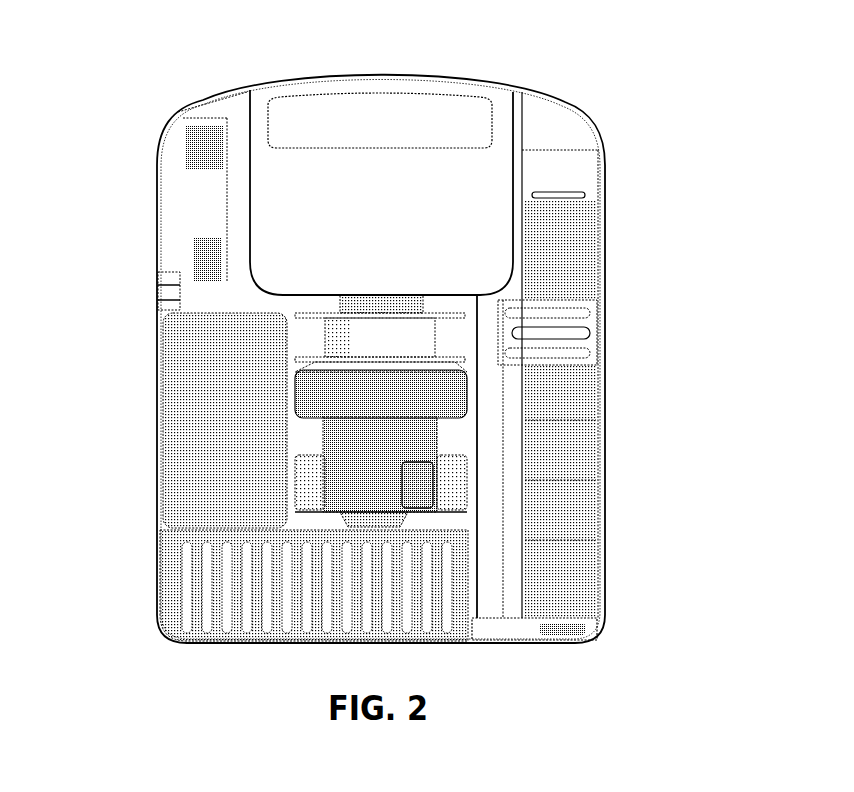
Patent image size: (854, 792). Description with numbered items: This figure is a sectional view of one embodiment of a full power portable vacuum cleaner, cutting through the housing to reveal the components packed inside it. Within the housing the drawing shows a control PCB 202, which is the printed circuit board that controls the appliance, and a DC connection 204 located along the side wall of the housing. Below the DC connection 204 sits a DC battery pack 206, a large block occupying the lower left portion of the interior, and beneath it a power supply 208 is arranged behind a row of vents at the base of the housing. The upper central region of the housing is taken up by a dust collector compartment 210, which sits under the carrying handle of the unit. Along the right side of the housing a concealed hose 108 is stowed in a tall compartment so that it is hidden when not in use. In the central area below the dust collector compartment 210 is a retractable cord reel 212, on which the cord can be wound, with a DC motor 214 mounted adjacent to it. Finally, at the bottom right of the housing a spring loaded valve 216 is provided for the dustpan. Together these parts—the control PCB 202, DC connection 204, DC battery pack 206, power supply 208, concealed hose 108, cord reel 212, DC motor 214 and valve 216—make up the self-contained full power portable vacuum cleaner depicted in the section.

The control PCB 202 is at (207, 147).
The DC connection 204 is at (158, 280).
The DC battery pack 206 is at (205, 405).
The power supply 208 is at (198, 603).
The dust collector compartment 210 is at (490, 165).
The concealed hose 108 is at (562, 233).
The retractable cord reel 212 is at (445, 348).
The DC motor 214 is at (427, 490).
The spring loaded valve 216 is at (583, 632).